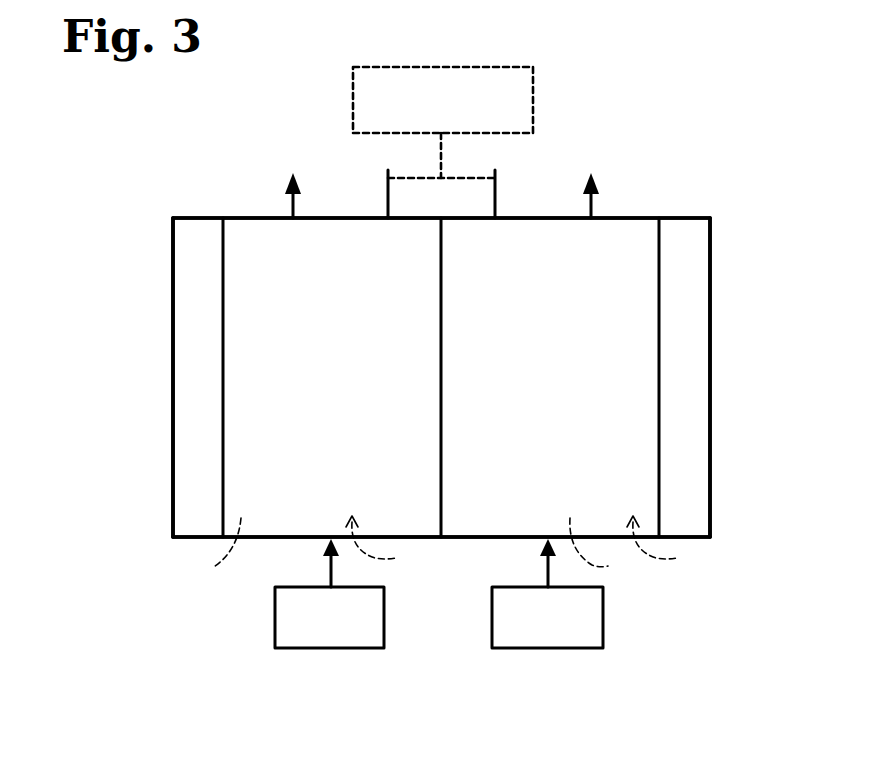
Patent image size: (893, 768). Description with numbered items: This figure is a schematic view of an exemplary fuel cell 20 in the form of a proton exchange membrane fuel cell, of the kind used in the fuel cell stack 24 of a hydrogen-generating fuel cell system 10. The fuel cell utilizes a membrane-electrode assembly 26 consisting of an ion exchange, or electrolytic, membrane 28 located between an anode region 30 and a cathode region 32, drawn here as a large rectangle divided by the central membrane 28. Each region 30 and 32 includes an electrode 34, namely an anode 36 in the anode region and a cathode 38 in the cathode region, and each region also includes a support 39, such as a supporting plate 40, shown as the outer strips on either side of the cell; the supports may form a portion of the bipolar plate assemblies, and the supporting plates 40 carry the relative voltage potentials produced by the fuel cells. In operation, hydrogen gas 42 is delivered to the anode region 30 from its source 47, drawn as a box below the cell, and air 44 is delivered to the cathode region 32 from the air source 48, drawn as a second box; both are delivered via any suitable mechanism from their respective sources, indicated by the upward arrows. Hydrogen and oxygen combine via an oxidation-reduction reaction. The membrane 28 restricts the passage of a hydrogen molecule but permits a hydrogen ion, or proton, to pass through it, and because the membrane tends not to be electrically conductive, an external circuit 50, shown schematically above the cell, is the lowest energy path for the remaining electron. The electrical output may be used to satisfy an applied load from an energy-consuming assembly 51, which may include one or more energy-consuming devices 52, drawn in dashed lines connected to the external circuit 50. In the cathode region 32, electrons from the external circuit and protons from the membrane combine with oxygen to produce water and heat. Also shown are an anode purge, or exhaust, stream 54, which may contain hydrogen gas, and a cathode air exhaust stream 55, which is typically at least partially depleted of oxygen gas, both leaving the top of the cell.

The hydrogen-generating fuel cell system 10 is at (163, 152).
The fuel cell 20 is at (152, 302).
The fuel cell stack 24 is at (137, 260).
The membrane-electrode assembly 26 is at (440, 544).
The ion exchange membrane 28 is at (441, 333).
The anode region 30 is at (222, 487).
The cathode region 32 is at (662, 443).
The electrode 34 is at (525, 544).
The anode 36 is at (212, 566).
The cathode 38 is at (601, 549).
The support 39 is at (173, 345).
The supporting plate 40 is at (173, 395).
The hydrogen gas 42 is at (330, 572).
The air 44 is at (548, 572).
The first source 47 is at (330, 648).
The air source 48 is at (548, 648).
The external circuit 50 is at (410, 178).
The energy-consuming assembly 51 is at (424, 67).
The energy-consuming device 52 is at (533, 110).
The anode purge stream 54 is at (290, 207).
The cathode air exhaust stream 55 is at (595, 203).